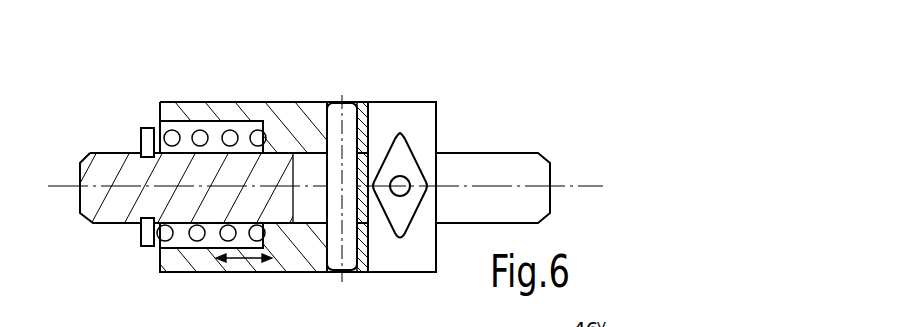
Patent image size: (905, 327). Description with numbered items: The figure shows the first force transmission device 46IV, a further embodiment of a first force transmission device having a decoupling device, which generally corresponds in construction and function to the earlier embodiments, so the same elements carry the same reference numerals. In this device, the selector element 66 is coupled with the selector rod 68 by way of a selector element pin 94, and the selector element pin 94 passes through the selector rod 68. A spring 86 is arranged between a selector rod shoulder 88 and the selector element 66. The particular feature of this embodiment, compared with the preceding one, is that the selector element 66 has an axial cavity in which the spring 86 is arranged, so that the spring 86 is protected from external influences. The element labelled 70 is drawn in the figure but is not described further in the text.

The selector rod 68 is at (100, 187).
The selector element 66 is at (290, 250).
The spring 86 is at (202, 135).
The selector rod shoulder 88 is at (143, 130).
The selector element pin 94 is at (340, 102).
The cam element 70 is at (403, 157).
The first force transmission device 46IV is at (503, 113).